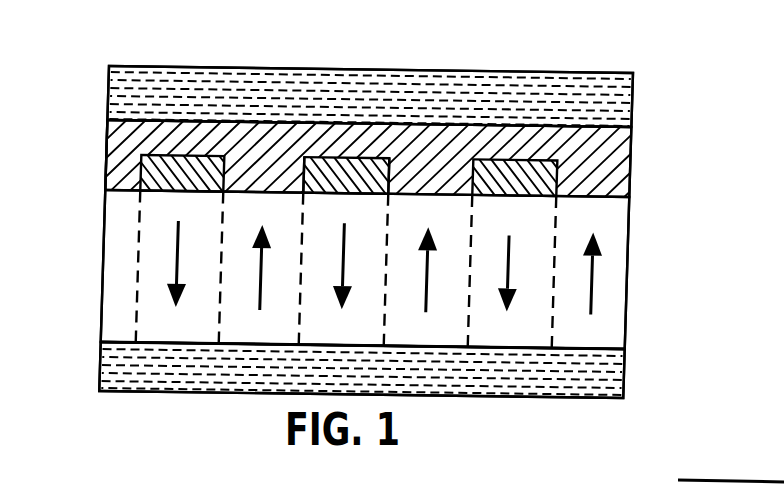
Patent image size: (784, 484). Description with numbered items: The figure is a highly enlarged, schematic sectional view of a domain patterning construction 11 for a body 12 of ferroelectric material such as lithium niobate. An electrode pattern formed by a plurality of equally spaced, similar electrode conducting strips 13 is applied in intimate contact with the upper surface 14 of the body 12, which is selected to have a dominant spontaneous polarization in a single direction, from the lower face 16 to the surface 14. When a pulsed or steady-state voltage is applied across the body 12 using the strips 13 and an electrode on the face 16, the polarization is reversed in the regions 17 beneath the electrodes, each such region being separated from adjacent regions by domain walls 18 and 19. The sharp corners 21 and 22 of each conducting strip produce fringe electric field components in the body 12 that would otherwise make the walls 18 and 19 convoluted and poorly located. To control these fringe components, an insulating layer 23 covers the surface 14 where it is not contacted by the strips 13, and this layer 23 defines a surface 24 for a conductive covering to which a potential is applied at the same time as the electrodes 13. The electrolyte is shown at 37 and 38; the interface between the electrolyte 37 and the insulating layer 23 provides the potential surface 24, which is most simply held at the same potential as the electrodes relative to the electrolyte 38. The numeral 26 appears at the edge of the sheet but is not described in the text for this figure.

The domain patterning construction 11 is at (700, 240).
The body of ferroelectric material 12 is at (613, 313).
The electrode conducting strips 13 is at (179, 157).
The surface 14 is at (632, 180).
The face 16 is at (597, 350).
The regions 17 is at (384, 261).
The domain wall 18 is at (140, 255).
The domain wall 19 is at (220, 252).
The sharp corner 21 is at (303, 193).
The sharp corner 22 is at (390, 193).
The insulating layer 23 is at (114, 143).
The surface 24 is at (632, 127).
The light source 26 is at (783, 431).
The electrolyte 37 is at (392, 110).
The electrolyte 38 is at (514, 386).